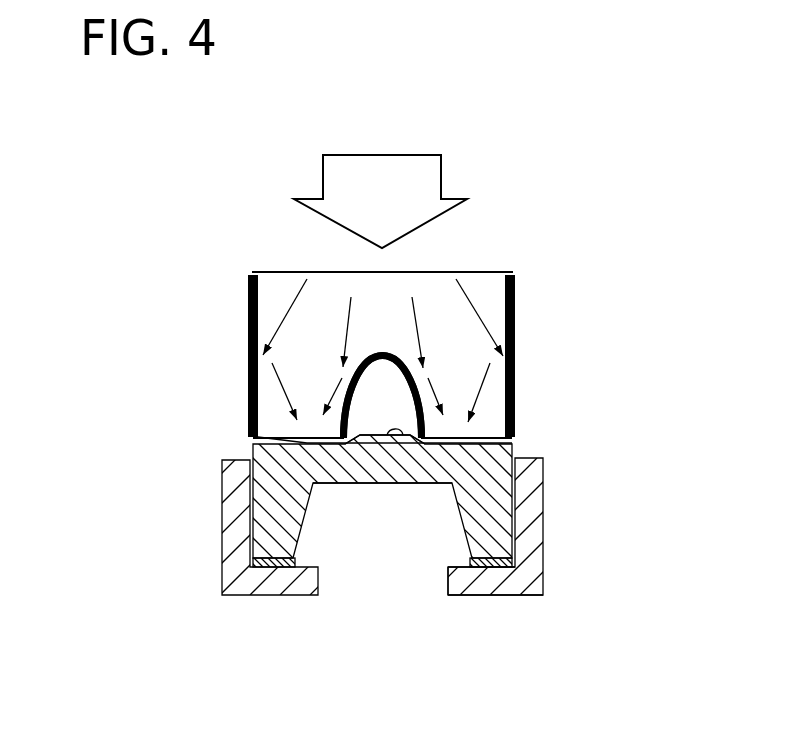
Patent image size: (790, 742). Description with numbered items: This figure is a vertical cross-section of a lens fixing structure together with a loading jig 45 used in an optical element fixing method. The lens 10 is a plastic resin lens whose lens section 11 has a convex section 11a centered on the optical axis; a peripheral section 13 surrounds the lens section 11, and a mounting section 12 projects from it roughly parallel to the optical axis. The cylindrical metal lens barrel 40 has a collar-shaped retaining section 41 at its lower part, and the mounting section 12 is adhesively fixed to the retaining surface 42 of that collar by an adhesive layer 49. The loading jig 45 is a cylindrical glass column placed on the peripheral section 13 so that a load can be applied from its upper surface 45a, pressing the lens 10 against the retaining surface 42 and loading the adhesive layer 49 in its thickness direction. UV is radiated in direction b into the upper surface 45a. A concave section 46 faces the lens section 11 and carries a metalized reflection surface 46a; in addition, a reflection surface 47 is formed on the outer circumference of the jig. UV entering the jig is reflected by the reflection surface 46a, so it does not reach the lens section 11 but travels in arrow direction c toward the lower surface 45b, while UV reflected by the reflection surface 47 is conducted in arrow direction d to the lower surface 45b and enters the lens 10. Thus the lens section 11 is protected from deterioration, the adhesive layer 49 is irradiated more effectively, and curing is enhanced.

The UV radiation direction b is at (412, 178).
The arrow direction c is at (347, 322).
The arrow direction d is at (417, 318).
The lens 10 is at (403, 550).
The lens section 11 is at (373, 447).
The convex section 11a is at (398, 440).
The mounting section 12 is at (265, 512).
The peripheral section 13 is at (249, 435).
The lens barrel 40 is at (550, 538).
The retaining section 41 is at (515, 587).
The retaining surface 42 is at (460, 562).
The loading jig 45 is at (236, 393).
The upper surface 45a is at (479, 271).
The lower surface 45b is at (513, 449).
The concave section 46 is at (400, 413).
The reflection surface 46a is at (422, 393).
The reflection surface 47 is at (249, 367).
The adhesive layer 49 is at (278, 562).